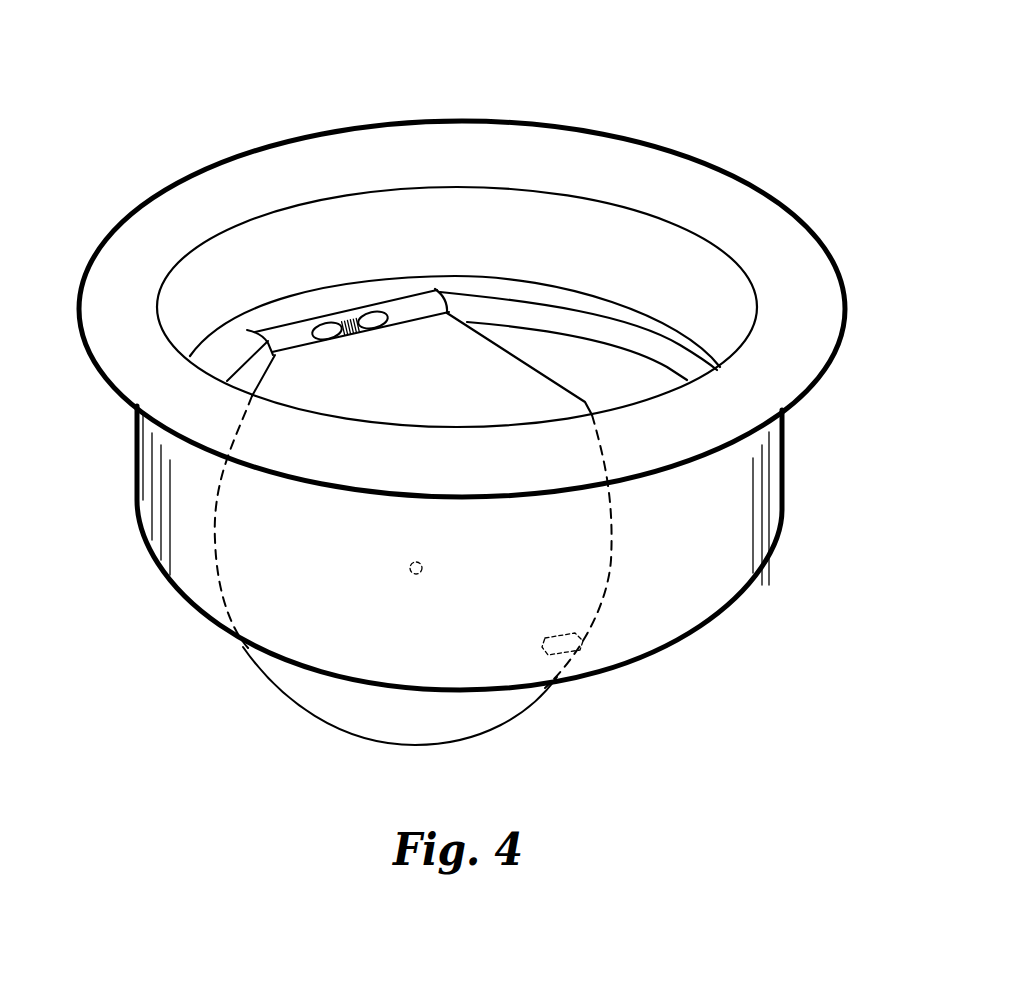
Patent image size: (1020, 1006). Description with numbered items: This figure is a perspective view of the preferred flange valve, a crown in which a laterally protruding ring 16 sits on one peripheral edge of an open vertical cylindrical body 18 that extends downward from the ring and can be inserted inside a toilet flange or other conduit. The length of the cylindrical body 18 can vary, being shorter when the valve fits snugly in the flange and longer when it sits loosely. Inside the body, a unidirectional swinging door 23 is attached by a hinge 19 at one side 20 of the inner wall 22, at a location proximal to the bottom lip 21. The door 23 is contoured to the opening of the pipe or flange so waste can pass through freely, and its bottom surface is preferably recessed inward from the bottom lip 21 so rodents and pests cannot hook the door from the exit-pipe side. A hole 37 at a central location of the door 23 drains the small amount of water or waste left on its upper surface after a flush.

The laterally protruding ring 16 is at (750, 217).
The vertical cylindrical body 18 is at (780, 492).
The hinge 19 is at (377, 318).
The side 20 is at (327, 287).
The bottom lip 21 is at (170, 590).
The inner wall 22 is at (523, 233).
The door 23 is at (370, 713).
The hole 37 is at (410, 570).